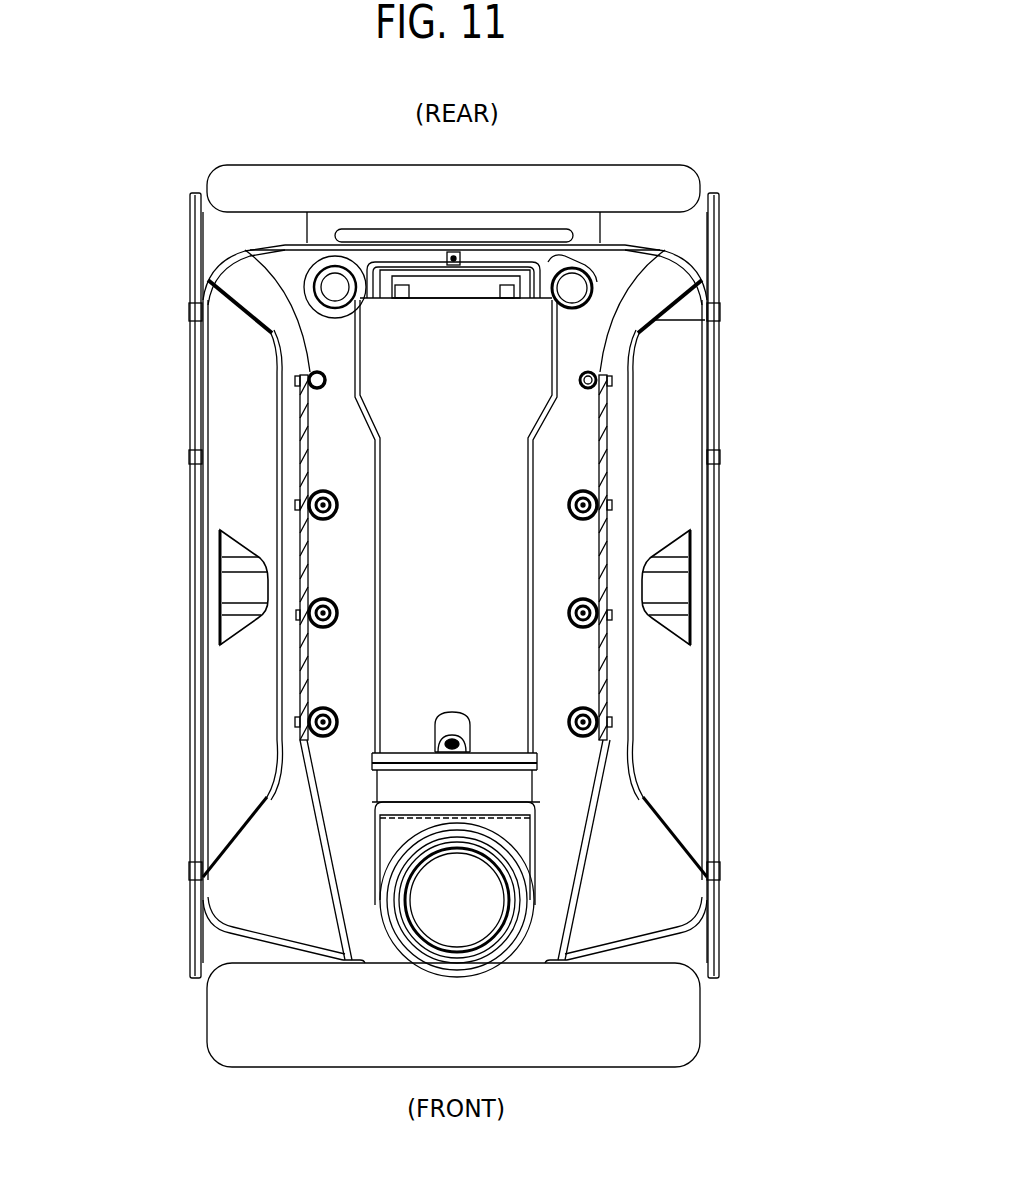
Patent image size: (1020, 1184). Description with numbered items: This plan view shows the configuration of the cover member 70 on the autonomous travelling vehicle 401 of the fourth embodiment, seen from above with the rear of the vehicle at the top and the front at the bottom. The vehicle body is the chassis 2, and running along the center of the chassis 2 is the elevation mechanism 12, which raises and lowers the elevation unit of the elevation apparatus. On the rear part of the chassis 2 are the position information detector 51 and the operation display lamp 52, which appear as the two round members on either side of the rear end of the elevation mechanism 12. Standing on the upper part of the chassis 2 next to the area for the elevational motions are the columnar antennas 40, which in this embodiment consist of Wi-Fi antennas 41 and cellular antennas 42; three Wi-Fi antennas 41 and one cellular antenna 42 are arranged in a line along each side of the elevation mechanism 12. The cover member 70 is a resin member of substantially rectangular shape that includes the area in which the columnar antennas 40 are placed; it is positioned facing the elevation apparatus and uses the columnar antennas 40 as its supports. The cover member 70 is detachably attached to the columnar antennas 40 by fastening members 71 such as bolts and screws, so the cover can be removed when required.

The autonomous travelling vehicle 401 is at (734, 180).
The chassis 2 is at (687, 818).
The elevation mechanism 12 is at (457, 330).
The position information detector 51 is at (330, 288).
The operation display lamp 52 is at (573, 290).
The columnar antennas 40 is at (472, 592).
The Wi-Fi antennas 41 is at (309, 504).
The cellular antennas 42 is at (310, 378).
The cover member 70 is at (299, 660).
The fastening members 71 is at (267, 615).